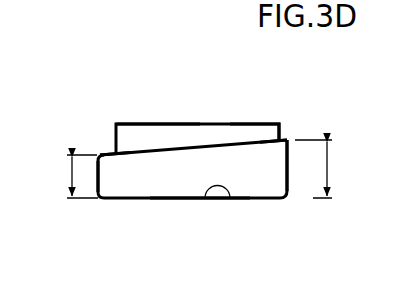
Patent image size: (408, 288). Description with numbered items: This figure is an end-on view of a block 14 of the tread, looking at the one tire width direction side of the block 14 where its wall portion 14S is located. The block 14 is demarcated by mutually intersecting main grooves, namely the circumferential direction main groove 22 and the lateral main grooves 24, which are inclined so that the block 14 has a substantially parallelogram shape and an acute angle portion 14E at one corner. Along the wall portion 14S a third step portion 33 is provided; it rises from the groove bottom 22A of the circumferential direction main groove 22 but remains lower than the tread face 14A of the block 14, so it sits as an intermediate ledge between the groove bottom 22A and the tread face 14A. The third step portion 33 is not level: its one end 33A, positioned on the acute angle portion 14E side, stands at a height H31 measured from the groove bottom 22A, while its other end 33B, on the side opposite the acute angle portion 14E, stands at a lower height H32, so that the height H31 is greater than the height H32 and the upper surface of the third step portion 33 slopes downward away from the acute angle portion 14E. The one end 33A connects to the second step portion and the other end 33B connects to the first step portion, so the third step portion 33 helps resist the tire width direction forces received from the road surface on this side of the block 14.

The block 14 is at (194, 119).
The tread face 14A is at (152, 123).
The acute angle portion 14E is at (245, 123).
The wall portion 14S is at (180, 192).
The circumferential direction main groove 22 is at (236, 181).
The groove bottom 22A is at (230, 199).
The lateral main groove 24 is at (69, 139).
The third step portion 33 is at (237, 142).
The one end of third step portion 33A is at (285, 139).
The other end of third step portion 33B is at (105, 153).
The height H31 is at (331, 169).
The height H32 is at (64, 176).